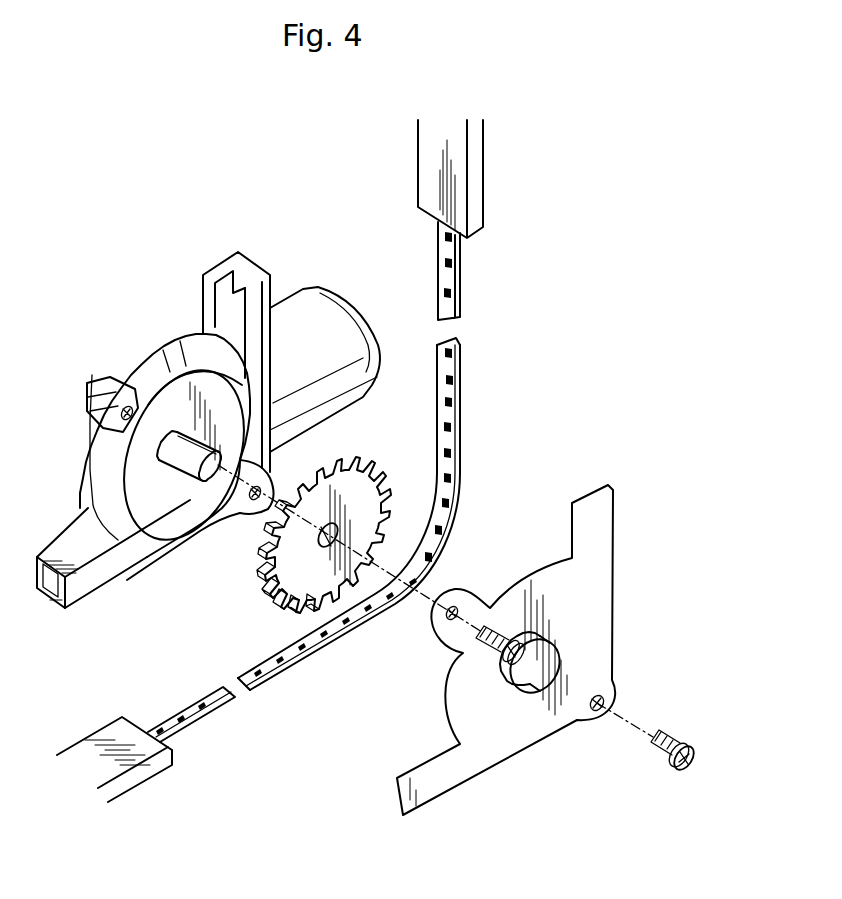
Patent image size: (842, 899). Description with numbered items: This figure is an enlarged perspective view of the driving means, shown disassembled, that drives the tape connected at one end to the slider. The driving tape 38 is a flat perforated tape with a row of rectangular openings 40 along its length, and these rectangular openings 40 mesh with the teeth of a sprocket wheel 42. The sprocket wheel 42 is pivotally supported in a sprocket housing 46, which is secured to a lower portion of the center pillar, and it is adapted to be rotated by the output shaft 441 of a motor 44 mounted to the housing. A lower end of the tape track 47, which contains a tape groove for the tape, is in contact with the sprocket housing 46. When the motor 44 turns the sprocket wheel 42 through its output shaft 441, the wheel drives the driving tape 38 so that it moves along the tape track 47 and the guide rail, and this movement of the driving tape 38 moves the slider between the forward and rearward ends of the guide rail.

The driving tape 38 is at (460, 418).
The rectangular openings 40 is at (453, 402).
The sprocket wheel 42 is at (367, 497).
The motor 44 is at (296, 300).
The output shaft 441 is at (193, 452).
The sprocket housing 46 is at (173, 348).
The tape track 47 is at (478, 208).